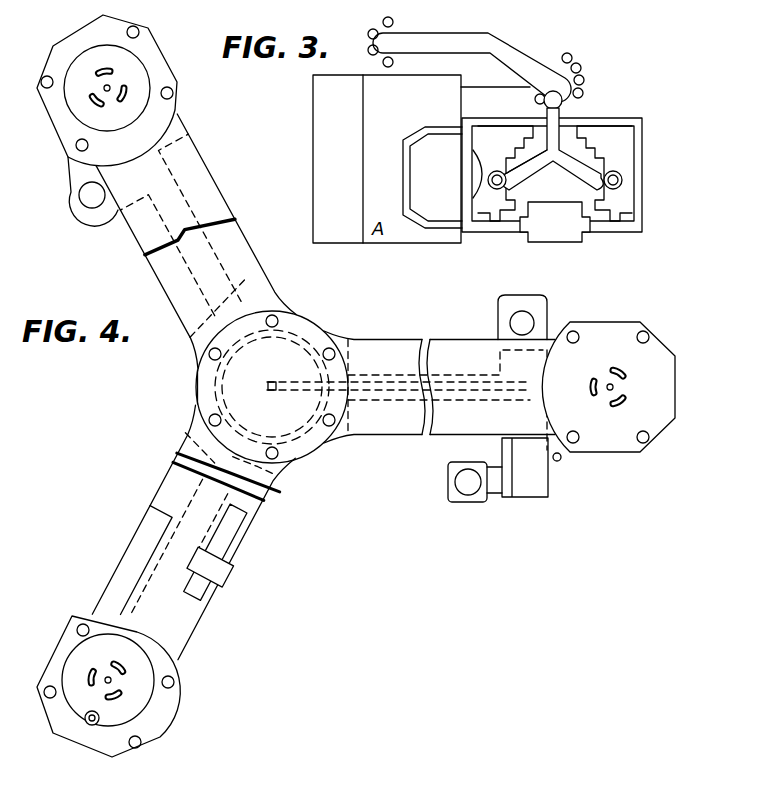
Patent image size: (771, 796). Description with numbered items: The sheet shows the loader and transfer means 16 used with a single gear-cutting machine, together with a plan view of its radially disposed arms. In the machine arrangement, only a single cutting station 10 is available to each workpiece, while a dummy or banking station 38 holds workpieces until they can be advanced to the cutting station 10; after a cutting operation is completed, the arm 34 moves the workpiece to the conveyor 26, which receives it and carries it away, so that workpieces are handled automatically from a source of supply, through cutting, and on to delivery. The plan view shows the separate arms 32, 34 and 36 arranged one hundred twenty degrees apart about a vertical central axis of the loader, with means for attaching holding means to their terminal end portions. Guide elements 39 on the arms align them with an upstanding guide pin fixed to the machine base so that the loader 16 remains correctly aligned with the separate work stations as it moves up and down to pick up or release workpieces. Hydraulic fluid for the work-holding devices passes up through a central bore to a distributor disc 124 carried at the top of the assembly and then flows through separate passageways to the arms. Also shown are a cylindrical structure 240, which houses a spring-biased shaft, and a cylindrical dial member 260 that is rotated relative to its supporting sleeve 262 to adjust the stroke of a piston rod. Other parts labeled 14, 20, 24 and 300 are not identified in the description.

In FIG. 3, the cutting station 10 is at (498, 172).
In FIG. 3, the left pivot 14 is at (489, 179).
In FIG. 3, the work loader and transfer means 16 is at (551, 171).
In FIG. 3, the stem of link 24 is at (555, 146).
In FIG. 3, the conveyor 26 is at (526, 40).
In FIG. 3, the arm 34 is at (529, 171).
In FIG. 4, the arm 34 is at (174, 498).
In FIG. 3, the dummy or banking station 38 is at (627, 160).
In FIG. 3, the base block 300 is at (573, 229).
In FIG. 4, the manipulator assembly 20 is at (356, 386).
In FIG. 4, the arm 32 is at (403, 427).
In FIG. 4, the arm 36 is at (222, 202).
In FIG. 4, the guide elements 39 is at (514, 323).
In FIG. 4, the distributor disc 124 is at (301, 449).
In FIG. 4, the cylindrical structure 240 is at (117, 592).
In FIG. 4, the cylindrical dial member 260 is at (236, 549).
In FIG. 4, the supporting sleeve 262 is at (221, 587).